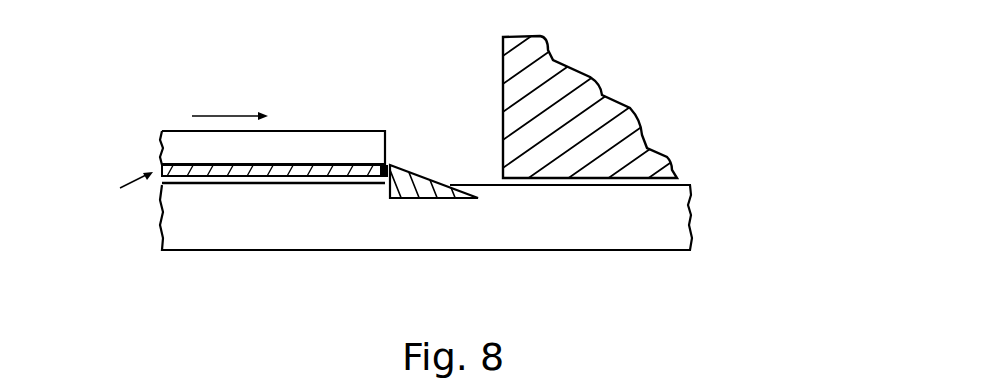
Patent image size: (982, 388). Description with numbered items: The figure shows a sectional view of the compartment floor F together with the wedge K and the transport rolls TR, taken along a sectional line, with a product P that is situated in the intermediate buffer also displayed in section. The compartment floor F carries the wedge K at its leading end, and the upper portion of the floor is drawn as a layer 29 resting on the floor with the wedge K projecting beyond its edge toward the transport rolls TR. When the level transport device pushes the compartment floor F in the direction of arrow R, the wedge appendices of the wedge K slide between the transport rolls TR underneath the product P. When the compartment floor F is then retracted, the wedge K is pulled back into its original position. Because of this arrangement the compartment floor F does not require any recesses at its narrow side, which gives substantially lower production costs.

The coated web / sheet element 29 is at (320, 147).
The wedge K is at (400, 176).
The product P is at (600, 112).
The transport rolls TR is at (655, 232).
The direction of arrow R is at (230, 106).
The compartment floor F is at (126, 187).